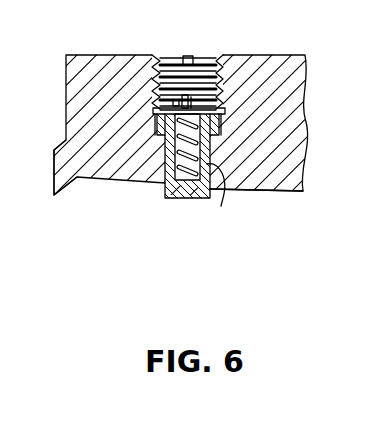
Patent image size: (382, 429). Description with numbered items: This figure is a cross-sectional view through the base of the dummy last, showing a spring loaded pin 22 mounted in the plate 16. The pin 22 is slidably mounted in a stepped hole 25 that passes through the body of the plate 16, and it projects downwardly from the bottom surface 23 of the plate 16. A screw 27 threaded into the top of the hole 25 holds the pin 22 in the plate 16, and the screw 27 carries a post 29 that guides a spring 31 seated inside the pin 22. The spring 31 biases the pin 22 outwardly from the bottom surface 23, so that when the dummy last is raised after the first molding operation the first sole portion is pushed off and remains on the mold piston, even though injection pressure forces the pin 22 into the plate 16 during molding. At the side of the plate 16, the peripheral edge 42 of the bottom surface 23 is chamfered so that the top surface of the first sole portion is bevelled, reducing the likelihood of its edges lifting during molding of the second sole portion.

The plate 16 is at (73, 105).
The spring loaded pin 22 is at (167, 200).
The bottom surface 23 is at (277, 190).
The stepped hole 25 is at (224, 98).
The screw 27 is at (166, 72).
The post 29 is at (188, 100).
The spring 31 is at (221, 206).
The peripheral edge 42 is at (77, 178).